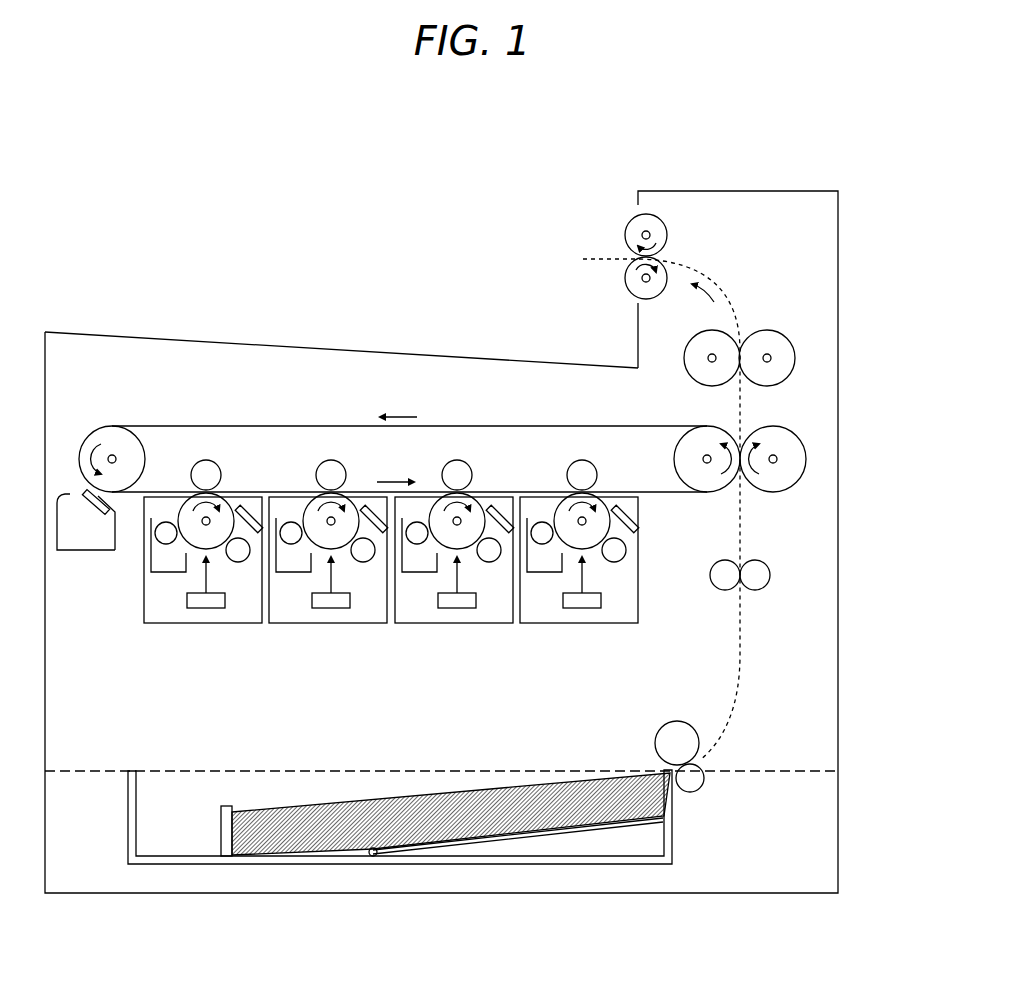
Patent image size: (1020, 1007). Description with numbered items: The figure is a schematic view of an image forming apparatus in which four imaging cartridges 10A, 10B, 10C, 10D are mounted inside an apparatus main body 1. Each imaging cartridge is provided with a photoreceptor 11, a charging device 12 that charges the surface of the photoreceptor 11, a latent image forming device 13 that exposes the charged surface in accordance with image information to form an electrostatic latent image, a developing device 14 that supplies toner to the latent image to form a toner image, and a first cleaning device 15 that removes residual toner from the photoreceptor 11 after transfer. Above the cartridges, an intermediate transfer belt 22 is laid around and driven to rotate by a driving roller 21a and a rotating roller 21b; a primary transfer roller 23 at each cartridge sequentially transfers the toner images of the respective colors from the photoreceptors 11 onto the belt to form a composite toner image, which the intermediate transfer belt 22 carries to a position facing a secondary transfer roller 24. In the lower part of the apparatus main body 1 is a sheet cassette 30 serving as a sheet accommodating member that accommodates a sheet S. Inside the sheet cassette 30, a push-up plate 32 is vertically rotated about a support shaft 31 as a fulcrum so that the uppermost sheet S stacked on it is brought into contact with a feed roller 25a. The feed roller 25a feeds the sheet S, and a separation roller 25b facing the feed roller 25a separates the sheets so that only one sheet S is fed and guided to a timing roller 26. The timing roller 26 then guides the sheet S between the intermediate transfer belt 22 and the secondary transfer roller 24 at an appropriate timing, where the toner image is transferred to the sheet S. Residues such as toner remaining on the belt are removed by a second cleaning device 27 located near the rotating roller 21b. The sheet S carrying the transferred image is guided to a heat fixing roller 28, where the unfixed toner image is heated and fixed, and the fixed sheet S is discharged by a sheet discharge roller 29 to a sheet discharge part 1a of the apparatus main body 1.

The apparatus main body 1 is at (811, 180).
The sheet discharge part 1a is at (487, 357).
The imaging cartridge 10A is at (203, 636).
The imaging cartridge 10B is at (328, 636).
The imaging cartridge 10C is at (454, 636).
The imaging cartridge 10D is at (579, 636).
The photoreceptor 11 is at (188, 508).
The charging device 12 is at (238, 556).
The latent image forming device 13 is at (215, 608).
The developing device 14 is at (168, 565).
The first cleaning device 15 is at (247, 505).
The driving roller 21a is at (700, 447).
The rotating roller 21b is at (115, 447).
The intermediate transfer belt 22 is at (172, 426).
The primary transfer roller 23 is at (206, 460).
The secondary transfer roller 24 is at (778, 443).
The feed roller 25a is at (677, 721).
The separation roller 25b is at (695, 792).
The timing roller 26 is at (752, 560).
The second cleaning device 27 is at (83, 552).
The heat fixing roller 28 is at (697, 353).
The sheet discharge roller 29 is at (627, 282).
The sheet cassette 30 is at (815, 852).
The support shaft 31 is at (373, 856).
The push-up plate 32 is at (570, 830).
The sheet S is at (423, 795).